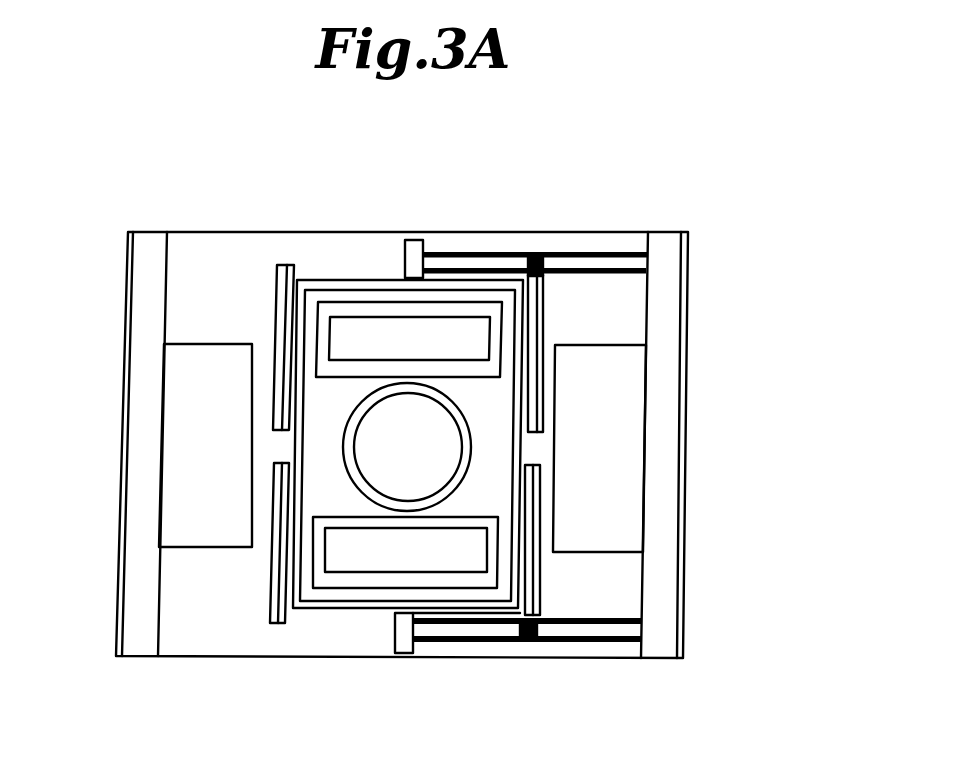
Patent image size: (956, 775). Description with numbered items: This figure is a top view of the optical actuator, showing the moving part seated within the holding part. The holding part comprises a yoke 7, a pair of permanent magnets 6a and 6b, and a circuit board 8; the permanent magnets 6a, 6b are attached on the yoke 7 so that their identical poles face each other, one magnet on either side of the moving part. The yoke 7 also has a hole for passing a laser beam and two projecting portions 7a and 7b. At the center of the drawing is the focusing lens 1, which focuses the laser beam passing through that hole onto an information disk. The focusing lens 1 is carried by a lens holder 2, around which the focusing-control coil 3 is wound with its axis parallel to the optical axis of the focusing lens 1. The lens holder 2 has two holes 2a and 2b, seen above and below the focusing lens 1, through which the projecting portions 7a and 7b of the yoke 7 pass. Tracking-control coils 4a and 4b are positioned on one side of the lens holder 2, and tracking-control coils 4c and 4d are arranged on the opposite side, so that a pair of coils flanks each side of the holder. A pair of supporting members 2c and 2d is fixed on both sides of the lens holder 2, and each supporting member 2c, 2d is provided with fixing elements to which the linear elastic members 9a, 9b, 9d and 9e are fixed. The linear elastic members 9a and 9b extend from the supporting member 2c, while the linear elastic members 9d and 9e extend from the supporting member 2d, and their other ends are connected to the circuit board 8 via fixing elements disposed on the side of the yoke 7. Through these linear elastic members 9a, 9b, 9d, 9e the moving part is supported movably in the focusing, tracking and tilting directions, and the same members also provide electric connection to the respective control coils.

The focusing lens 1 is at (370, 442).
The lens holder 2 is at (308, 397).
The hole 2a is at (347, 588).
The hole 2b is at (367, 305).
The supporting member 2c is at (407, 652).
The supporting member 2d is at (413, 255).
The focusing-control coil 3 is at (330, 282).
The tracking-control coil 4a is at (540, 598).
The tracking-control coil 4b is at (547, 298).
The tracking-control coil 4c is at (268, 608).
The tracking-control coil 4d is at (277, 270).
The permanent magnet 6a is at (598, 468).
The permanent magnet 6b is at (173, 430).
The yoke 7 is at (662, 567).
The projecting portion 7a is at (333, 557).
The projecting portion 7b is at (333, 337).
The circuit board 8 is at (688, 325).
The linear elastic member 9a is at (460, 630).
The linear elastic member 9b is at (602, 643).
The linear elastic member 9d is at (490, 262).
The linear elastic member 9e is at (607, 253).